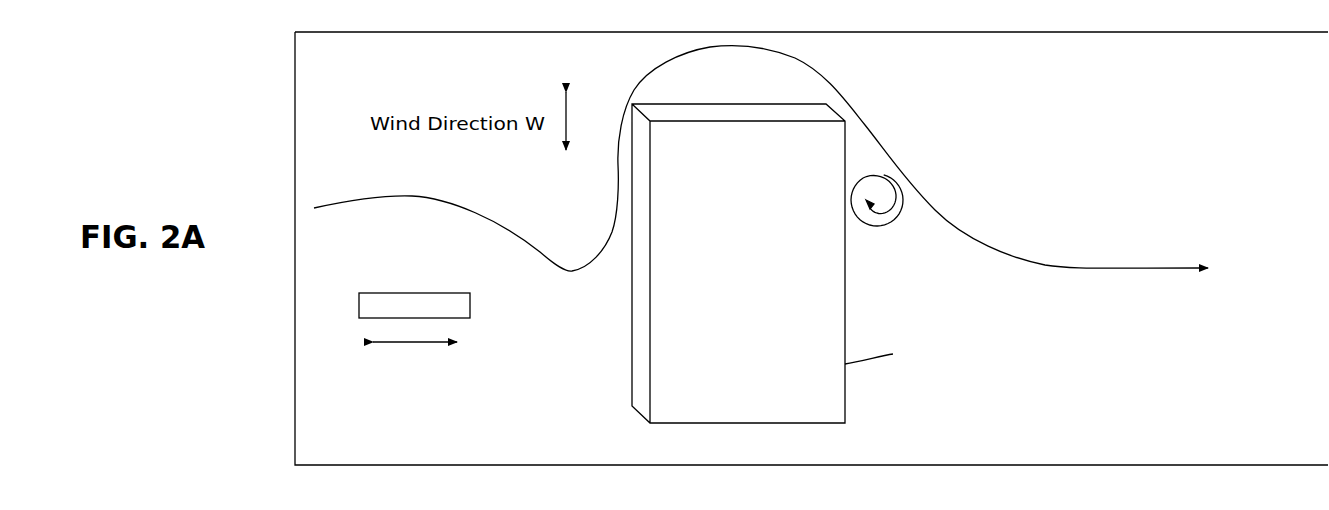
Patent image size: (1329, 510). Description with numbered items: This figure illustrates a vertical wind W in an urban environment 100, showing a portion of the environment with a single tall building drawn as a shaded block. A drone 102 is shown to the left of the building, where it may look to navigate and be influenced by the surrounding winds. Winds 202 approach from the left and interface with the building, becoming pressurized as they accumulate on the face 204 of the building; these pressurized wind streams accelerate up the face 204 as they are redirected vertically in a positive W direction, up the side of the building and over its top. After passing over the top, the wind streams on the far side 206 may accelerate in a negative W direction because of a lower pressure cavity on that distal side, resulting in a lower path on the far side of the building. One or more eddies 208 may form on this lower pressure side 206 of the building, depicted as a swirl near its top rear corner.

The urban environment 100 is at (1316, 436).
The drone 102 is at (470, 298).
The winds 202 is at (1082, 268).
The face of the building 204 is at (640, 323).
The far side of the building 206 is at (889, 353).
The eddies 208 is at (892, 228).